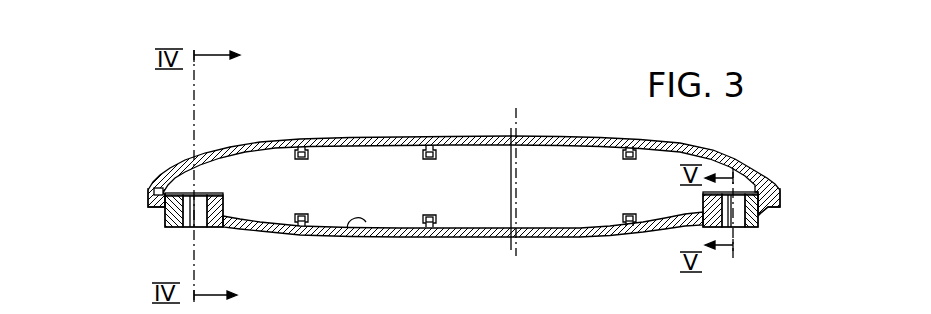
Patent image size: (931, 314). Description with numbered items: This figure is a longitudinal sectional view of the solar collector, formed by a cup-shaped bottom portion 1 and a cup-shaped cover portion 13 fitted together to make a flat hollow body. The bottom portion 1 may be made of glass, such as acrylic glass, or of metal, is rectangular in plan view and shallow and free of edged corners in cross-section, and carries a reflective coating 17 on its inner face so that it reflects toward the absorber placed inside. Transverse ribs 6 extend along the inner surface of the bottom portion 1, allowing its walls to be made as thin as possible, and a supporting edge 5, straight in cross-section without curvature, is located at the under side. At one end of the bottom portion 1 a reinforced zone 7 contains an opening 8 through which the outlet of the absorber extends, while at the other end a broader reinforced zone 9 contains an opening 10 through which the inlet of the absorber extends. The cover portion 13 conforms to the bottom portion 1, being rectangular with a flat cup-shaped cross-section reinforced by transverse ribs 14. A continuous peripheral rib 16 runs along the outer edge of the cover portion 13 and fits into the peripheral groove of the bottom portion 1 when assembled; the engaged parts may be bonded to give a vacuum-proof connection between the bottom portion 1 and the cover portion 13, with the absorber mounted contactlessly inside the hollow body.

The bottom portion 1 is at (483, 239).
The supporting edge 5 is at (153, 208).
The transverse ribs 6 is at (302, 239).
The reinforced zone 7 is at (710, 205).
The opening 8 is at (742, 217).
The broader reinforced zone 9 is at (221, 208).
The opening 10 is at (187, 226).
The cover portion 13 is at (481, 135).
The transverse ribs 14 is at (413, 137).
The peripheral rib 16 is at (158, 192).
The reflective coating 17 is at (365, 239).